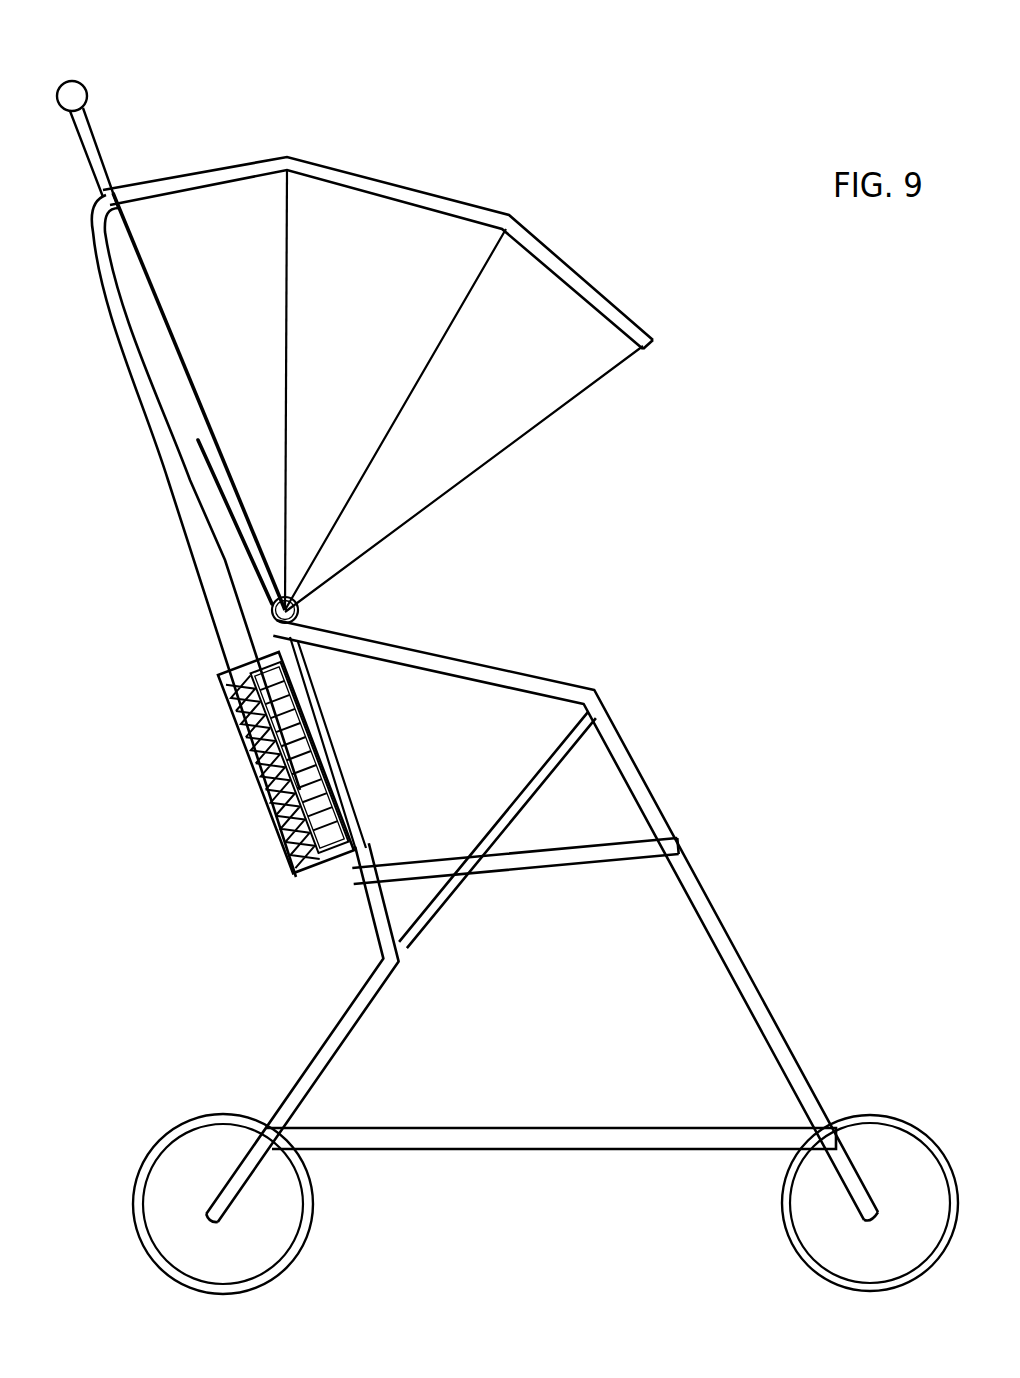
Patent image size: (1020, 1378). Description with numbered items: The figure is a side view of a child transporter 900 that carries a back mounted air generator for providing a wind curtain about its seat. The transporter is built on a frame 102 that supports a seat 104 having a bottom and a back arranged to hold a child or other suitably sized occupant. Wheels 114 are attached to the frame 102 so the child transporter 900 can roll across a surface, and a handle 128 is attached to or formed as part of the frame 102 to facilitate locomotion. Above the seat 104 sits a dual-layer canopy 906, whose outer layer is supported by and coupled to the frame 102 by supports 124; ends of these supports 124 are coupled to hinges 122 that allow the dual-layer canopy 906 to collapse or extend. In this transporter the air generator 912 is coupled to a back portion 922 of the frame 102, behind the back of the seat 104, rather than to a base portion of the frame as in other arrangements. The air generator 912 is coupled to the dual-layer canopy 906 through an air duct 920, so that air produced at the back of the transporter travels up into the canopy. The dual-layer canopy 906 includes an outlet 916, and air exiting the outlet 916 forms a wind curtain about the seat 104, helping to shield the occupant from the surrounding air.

The child transporter 900 is at (714, 218).
The handle 128 is at (78, 82).
The dual-layer canopy 906 is at (410, 183).
The outlet 916 is at (653, 341).
The supports 124 is at (285, 404).
The hinges 122 is at (290, 610).
The air duct 920 is at (197, 553).
The air generator 912 is at (223, 665).
The back portion 922 is at (318, 743).
The frame 102 is at (488, 660).
The seat 104 is at (543, 840).
The wheels 114 is at (133, 1197).